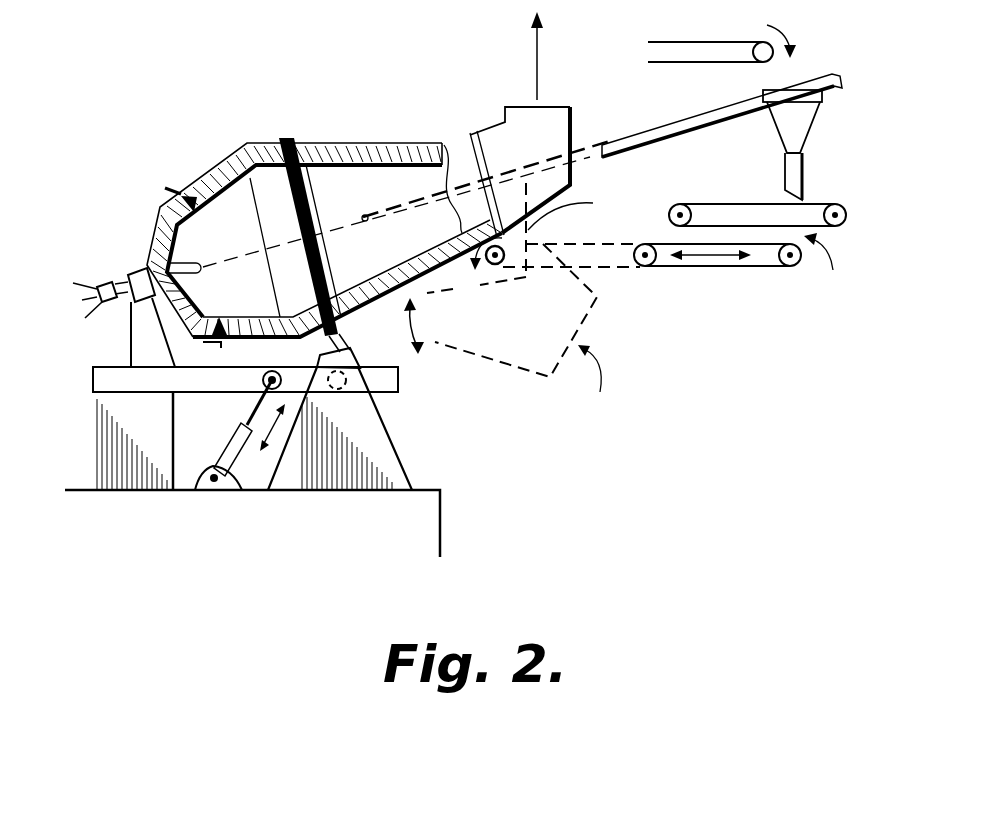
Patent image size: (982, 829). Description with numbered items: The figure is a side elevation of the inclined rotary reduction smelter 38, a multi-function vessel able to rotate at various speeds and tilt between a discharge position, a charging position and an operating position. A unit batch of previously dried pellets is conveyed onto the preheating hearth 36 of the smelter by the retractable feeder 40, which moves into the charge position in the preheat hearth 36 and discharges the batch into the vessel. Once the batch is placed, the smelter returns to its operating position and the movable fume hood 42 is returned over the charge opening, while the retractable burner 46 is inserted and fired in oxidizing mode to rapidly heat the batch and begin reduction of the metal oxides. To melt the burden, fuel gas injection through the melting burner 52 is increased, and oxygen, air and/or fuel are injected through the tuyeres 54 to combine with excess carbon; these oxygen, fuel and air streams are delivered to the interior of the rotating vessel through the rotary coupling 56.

The preheating hearth 36 is at (455, 285).
The inclined rotary reduction smelter 38 is at (268, 152).
The retractable feeder 40 is at (723, 267).
The movable fume hood 42 is at (572, 117).
The retractable burner 46 is at (650, 145).
The melting burner 52 is at (120, 284).
The tuyeres 54 is at (172, 188).
The rotary coupling 56 is at (142, 267).